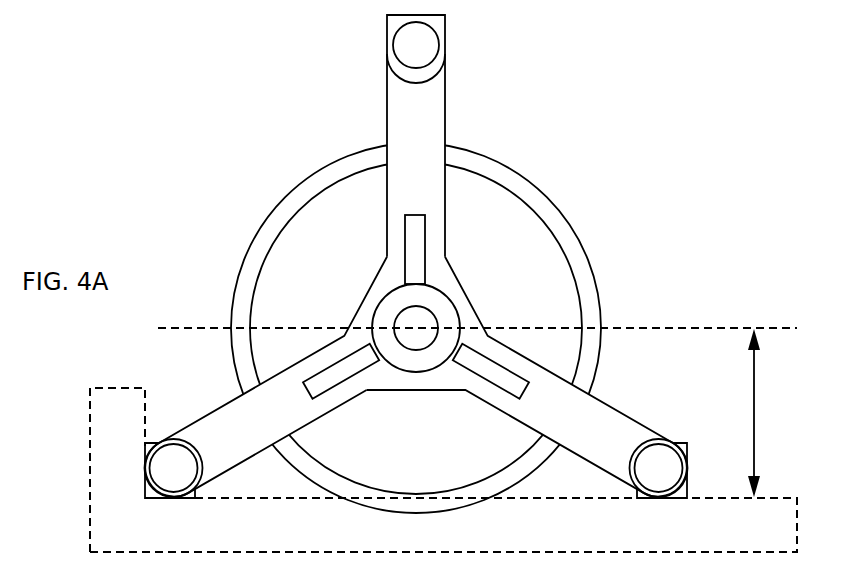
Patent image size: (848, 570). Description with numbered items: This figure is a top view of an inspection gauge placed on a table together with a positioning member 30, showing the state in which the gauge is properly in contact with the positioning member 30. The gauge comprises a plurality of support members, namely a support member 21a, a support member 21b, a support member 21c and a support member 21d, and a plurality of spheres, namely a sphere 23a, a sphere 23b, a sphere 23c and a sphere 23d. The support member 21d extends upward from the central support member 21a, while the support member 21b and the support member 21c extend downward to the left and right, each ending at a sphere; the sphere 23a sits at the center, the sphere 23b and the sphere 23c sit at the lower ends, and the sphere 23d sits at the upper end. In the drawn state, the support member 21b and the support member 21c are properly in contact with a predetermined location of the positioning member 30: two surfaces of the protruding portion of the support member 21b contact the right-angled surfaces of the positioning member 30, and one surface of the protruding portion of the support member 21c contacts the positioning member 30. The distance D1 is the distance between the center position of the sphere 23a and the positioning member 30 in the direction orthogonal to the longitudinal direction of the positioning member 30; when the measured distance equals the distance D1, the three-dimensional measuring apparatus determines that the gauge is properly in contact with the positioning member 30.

The support member 21a is at (385, 295).
The support member 21b is at (243, 463).
The support member 21c is at (627, 417).
The support member 21d is at (445, 97).
The sphere 23a is at (432, 309).
The sphere 23b is at (172, 441).
The sphere 23c is at (676, 447).
The sphere 23d is at (438, 43).
The positioning member 30 is at (90, 388).
The distance D1 is at (768, 413).